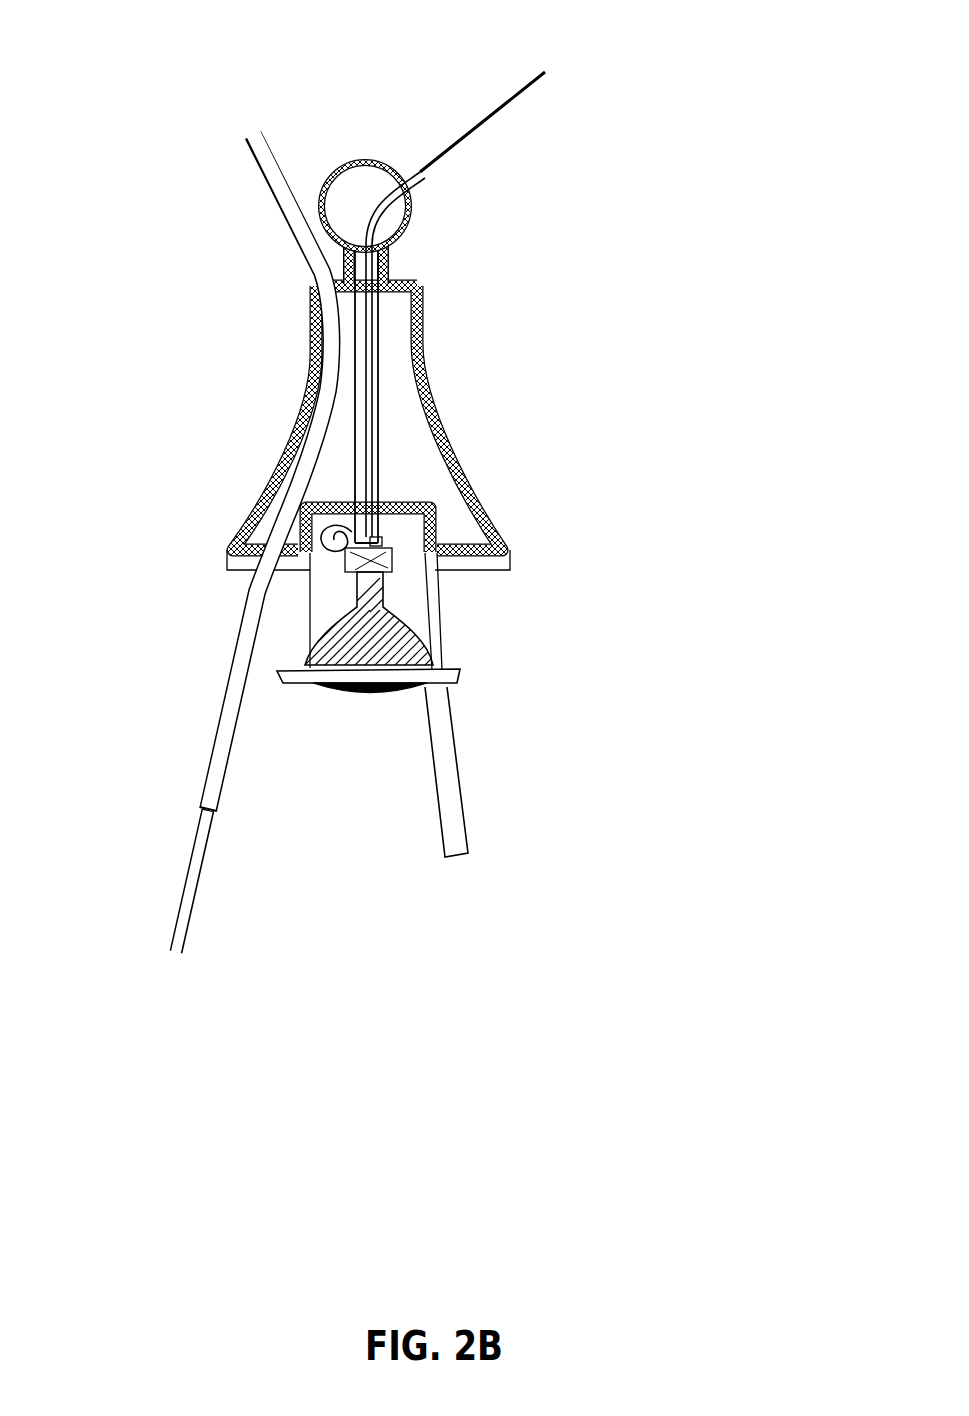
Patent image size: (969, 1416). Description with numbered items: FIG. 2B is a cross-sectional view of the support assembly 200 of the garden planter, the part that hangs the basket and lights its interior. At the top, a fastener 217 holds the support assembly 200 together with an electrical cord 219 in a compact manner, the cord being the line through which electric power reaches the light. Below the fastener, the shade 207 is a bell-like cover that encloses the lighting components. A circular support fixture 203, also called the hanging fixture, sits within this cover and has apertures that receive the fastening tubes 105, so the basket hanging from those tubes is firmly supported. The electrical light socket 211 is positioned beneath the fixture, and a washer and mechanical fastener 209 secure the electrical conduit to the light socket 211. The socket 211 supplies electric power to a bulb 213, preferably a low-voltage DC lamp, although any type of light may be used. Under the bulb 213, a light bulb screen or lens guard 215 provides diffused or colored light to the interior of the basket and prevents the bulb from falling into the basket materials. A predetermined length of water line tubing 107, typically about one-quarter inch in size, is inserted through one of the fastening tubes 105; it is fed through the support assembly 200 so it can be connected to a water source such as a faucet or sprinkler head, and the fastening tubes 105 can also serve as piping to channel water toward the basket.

The support assembly 200 is at (443, 612).
The fastening tube 105 is at (222, 690).
The water line tubing 107 is at (197, 884).
The circular support fixture 203 is at (392, 568).
The shade 207 is at (443, 420).
The washer and mechanical fastener 209 is at (376, 538).
The electrical light socket 211 is at (395, 566).
The bulb 213 is at (400, 637).
The light bulb screen or lens guard 215 is at (343, 693).
The fastener 217 is at (351, 163).
The electrical cord 219 is at (496, 282).